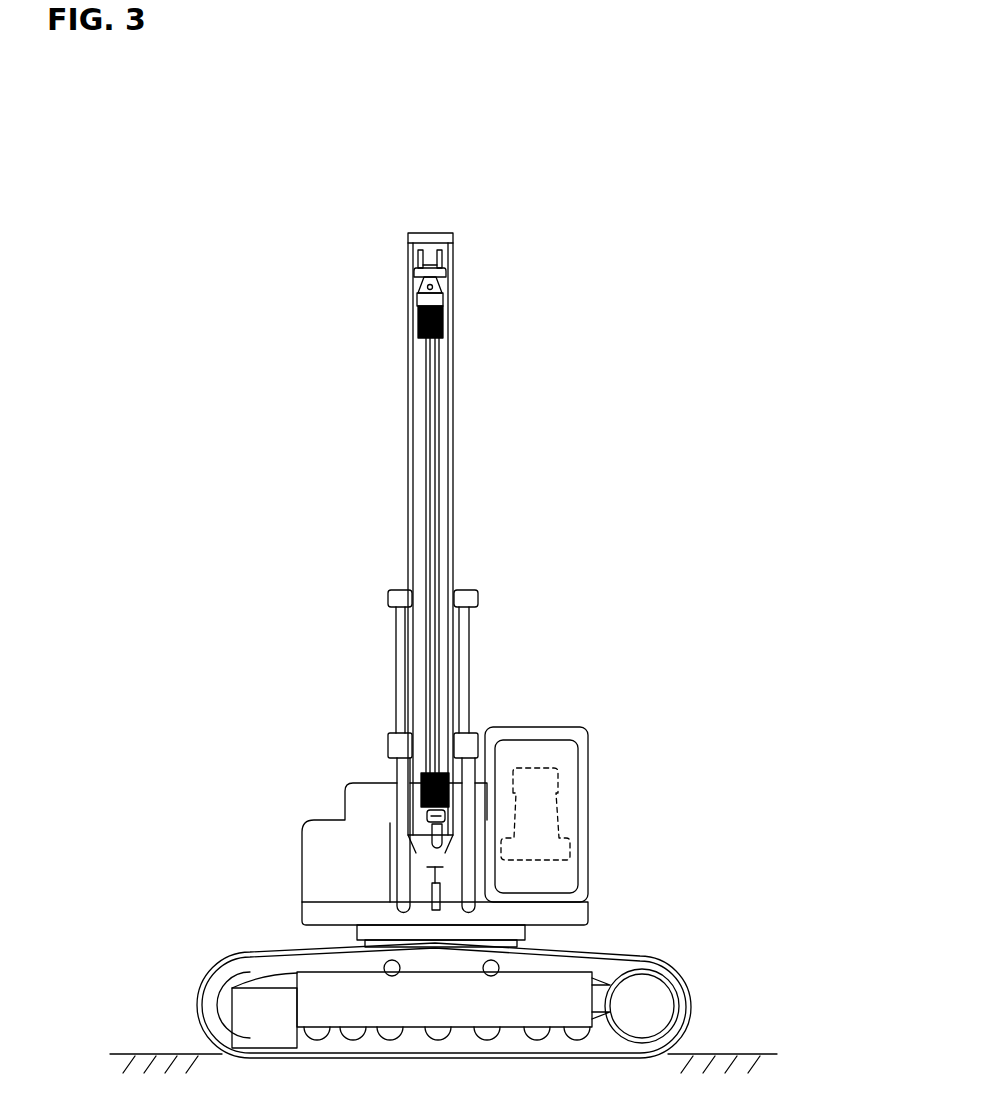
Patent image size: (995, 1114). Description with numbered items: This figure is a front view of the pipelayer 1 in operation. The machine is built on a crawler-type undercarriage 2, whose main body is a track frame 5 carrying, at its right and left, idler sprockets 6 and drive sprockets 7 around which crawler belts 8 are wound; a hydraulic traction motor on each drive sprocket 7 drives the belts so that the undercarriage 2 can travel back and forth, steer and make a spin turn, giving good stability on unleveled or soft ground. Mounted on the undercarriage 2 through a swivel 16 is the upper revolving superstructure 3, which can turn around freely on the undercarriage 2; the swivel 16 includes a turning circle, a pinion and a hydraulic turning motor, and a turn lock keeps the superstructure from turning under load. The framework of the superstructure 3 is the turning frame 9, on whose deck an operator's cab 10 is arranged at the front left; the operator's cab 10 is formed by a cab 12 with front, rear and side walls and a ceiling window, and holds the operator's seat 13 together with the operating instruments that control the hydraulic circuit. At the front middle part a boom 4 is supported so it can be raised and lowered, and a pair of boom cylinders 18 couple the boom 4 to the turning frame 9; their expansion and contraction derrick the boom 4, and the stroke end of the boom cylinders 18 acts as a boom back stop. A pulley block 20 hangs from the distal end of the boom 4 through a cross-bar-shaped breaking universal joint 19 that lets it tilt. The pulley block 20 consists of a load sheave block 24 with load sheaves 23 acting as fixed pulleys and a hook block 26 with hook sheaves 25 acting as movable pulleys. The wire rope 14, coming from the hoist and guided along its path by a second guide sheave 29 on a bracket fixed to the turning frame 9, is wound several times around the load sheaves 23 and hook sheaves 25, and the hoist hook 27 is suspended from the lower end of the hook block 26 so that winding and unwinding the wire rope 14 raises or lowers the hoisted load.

The pipelayer 1 is at (641, 181).
The crawler-type undercarriage 2 is at (689, 893).
The upper revolving superstructure 3 is at (236, 660).
The boom 4 is at (453, 382).
The track frame 5 is at (523, 1002).
The idler sprocket 6 is at (218, 1010).
The drive sprocket 7 is at (655, 1000).
The crawler belt 8 is at (688, 1028).
The turning frame 9 is at (590, 919).
The operator's cab 10 is at (512, 757).
The cab 12 is at (560, 727).
The operator's seat 13 is at (563, 823).
The wire rope 14 is at (427, 432).
The swivel 16 is at (349, 945).
The boom cylinder 18 is at (396, 630).
The universal joint 19 is at (440, 281).
The pulley block 20 is at (402, 290).
The load sheave 23 is at (445, 327).
The load sheave block 24 is at (418, 325).
The hook sheave 25 is at (429, 782).
The hook block 26 is at (432, 772).
The hoist hook 27 is at (430, 846).
The second guide sheave 29 is at (435, 912).